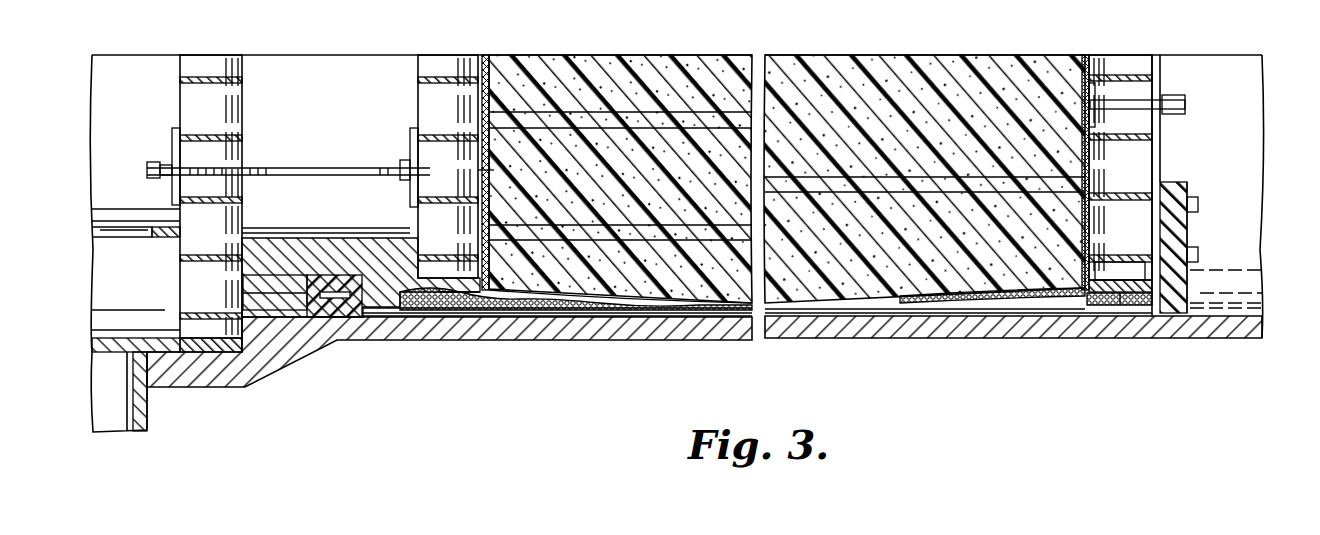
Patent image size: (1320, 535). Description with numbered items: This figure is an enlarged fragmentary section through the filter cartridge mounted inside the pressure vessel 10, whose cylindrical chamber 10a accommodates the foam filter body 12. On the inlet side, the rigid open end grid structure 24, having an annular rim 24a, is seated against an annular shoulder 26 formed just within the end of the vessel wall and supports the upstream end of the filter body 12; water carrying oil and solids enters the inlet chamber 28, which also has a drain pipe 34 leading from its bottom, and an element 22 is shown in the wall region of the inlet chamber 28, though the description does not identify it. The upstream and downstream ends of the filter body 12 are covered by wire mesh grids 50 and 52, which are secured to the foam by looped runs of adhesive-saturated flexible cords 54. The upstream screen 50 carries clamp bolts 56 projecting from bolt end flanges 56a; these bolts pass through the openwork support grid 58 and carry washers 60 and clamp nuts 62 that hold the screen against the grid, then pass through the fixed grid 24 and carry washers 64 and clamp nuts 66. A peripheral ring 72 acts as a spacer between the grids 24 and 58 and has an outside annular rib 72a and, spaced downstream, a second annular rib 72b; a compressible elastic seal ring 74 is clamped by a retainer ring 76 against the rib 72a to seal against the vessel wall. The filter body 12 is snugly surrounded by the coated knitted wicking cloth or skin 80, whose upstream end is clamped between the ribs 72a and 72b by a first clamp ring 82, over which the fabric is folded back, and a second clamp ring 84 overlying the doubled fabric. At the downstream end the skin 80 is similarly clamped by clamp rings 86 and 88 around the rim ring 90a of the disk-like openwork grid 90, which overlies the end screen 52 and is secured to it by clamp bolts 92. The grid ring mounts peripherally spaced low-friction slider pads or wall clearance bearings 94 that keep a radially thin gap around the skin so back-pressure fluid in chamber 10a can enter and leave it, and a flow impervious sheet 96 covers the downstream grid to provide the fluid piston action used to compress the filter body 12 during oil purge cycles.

The pressure vessel 10 is at (459, 345).
The cylindrical chamber 10a is at (1247, 200).
The filter body 12 is at (875, 258).
The shelf 22 is at (125, 238).
The filter cartridge end grid structure 24 is at (178, 90).
The annular rim 24a is at (228, 354).
The annular shoulder 26 is at (236, 348).
The inlet chamber 28 is at (142, 97).
The outlet or drain pipe 34 is at (140, 428).
The wire mesh grid (upstream end screen) 50 is at (494, 95).
The wire mesh grid (downstream end screen) 52 is at (1086, 90).
The adhesive-saturated flexible cords 54 is at (622, 130).
The clamp bolts 56 is at (312, 170).
The bolt end flanges 56a is at (492, 188).
The openwork support grid 58 is at (414, 82).
The washers 60 is at (410, 140).
The clamp nuts 62 is at (400, 160).
The washers 64 is at (172, 142).
The clamp nuts 66 is at (162, 178).
The peripheral ring 72 is at (335, 240).
The outside annular rib 72a is at (378, 309).
The second annular rib 72b is at (535, 308).
The compressible elastic seal ring 74 is at (335, 320).
The retainer ring 76 is at (246, 290).
The wicking cloth (skin) 80 is at (712, 310).
The first clamp ring 82 is at (428, 300).
The second clamp ring 84 is at (468, 302).
The clamp ring 86 is at (1132, 308).
The clamp ring 88 is at (1095, 307).
The disk-like openwork grid 90 is at (1114, 216).
The rim ring 90a is at (1047, 298).
The clamp bolts 92 is at (1130, 102).
The slider pads or wall clearance bearings 94 is at (1172, 300).
The flow impervious sheet 96 is at (1262, 150).